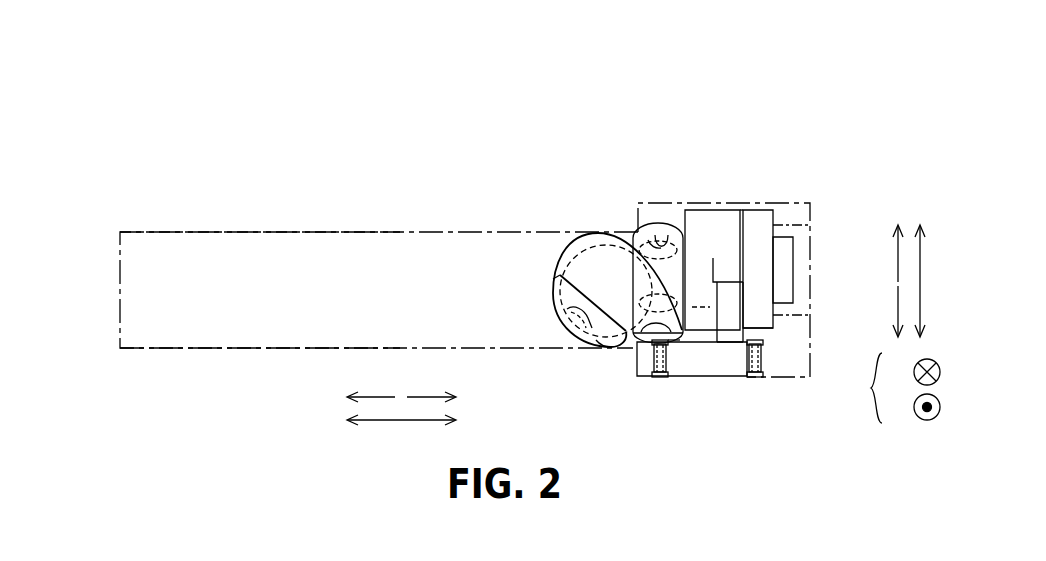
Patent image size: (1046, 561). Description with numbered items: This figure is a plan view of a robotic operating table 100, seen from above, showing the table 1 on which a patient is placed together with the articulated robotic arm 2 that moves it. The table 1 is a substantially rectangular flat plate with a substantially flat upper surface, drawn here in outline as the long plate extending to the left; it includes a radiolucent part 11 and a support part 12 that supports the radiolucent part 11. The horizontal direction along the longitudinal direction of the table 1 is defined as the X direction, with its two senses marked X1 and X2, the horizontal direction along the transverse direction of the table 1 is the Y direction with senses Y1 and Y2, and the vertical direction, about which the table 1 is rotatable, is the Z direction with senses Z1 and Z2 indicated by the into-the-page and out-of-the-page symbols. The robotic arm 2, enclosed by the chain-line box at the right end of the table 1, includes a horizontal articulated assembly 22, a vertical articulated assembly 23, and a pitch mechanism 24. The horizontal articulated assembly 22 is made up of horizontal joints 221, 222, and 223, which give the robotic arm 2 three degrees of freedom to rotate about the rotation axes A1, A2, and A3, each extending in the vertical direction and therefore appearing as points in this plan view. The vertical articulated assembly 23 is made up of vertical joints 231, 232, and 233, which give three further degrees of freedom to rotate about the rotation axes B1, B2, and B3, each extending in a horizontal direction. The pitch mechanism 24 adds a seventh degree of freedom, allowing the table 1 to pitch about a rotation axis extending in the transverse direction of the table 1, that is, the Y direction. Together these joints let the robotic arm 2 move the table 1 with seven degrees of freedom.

The table 1 is at (402, 256).
The radiolucent part 11 is at (298, 334).
The robotic operating table 100 is at (510, 211).
The articulated robotic arm 2 is at (718, 194).
The horizontal articulated assembly 22 is at (568, 334).
The horizontal joint 221 is at (566, 336).
The horizontal joint 222 is at (638, 334).
The horizontal joint 223 is at (668, 247).
The vertical articulated assembly 23 is at (778, 222).
The vertical joint 231 is at (707, 333).
The vertical joint 232 is at (739, 207).
The vertical joint 233 is at (746, 318).
The support part 12 is at (800, 250).
The pitch mechanism 24 is at (769, 374).
The rotation axis A1 is at (584, 326).
The rotation axis A2 is at (673, 333).
The rotation axis A3 is at (660, 250).
The rotation axis B1 is at (693, 307).
The rotation axis B2 is at (797, 224).
The rotation axis B3 is at (797, 315).
The X direction X is at (401, 431).
The X1 direction X1 is at (371, 388).
The X2 direction X2 is at (431, 388).
The Y direction Y is at (929, 281).
The Y1 direction Y1 is at (884, 311).
The Y2 direction Y2 is at (884, 253).
The Z direction Z is at (864, 388).
The Z1 direction Z1 is at (911, 407).
The Z2 direction Z2 is at (911, 371).